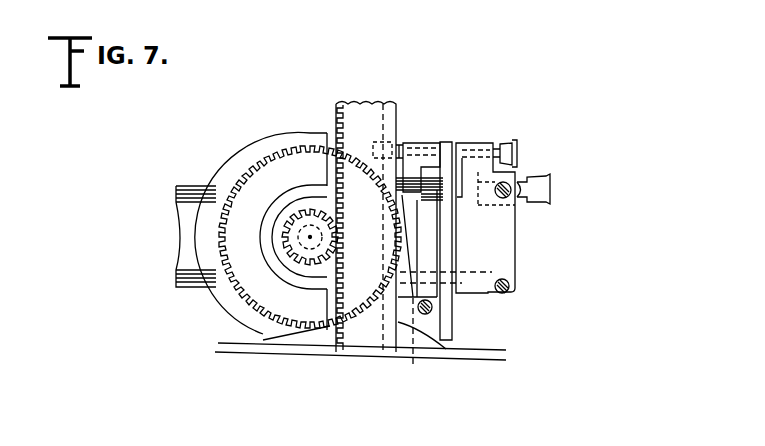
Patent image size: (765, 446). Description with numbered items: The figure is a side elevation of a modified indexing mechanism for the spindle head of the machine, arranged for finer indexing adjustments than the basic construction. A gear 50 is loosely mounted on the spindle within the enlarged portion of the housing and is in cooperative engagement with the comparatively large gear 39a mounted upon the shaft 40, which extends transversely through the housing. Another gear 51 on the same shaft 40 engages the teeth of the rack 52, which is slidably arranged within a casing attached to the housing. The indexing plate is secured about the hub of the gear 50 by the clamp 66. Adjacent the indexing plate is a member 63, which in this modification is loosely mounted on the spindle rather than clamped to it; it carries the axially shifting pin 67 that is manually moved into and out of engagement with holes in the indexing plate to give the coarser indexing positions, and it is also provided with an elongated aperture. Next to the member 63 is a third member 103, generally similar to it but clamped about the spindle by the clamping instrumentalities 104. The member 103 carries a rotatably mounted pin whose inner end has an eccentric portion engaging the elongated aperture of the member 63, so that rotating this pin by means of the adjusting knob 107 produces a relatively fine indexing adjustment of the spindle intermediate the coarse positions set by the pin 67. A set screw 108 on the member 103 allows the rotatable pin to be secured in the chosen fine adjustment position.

The gear 39a is at (249, 163).
The shaft 40 is at (296, 266).
The gear 50 is at (422, 341).
The gear 51 is at (300, 237).
The rack 52 is at (334, 112).
The member 63 is at (476, 284).
The clamp 66 is at (430, 168).
The pin 67 is at (517, 150).
The third member 103 is at (508, 227).
The clamping instrumentalities 104 is at (511, 292).
The adjusting knob 107 is at (545, 188).
The set screw 108 is at (511, 180).